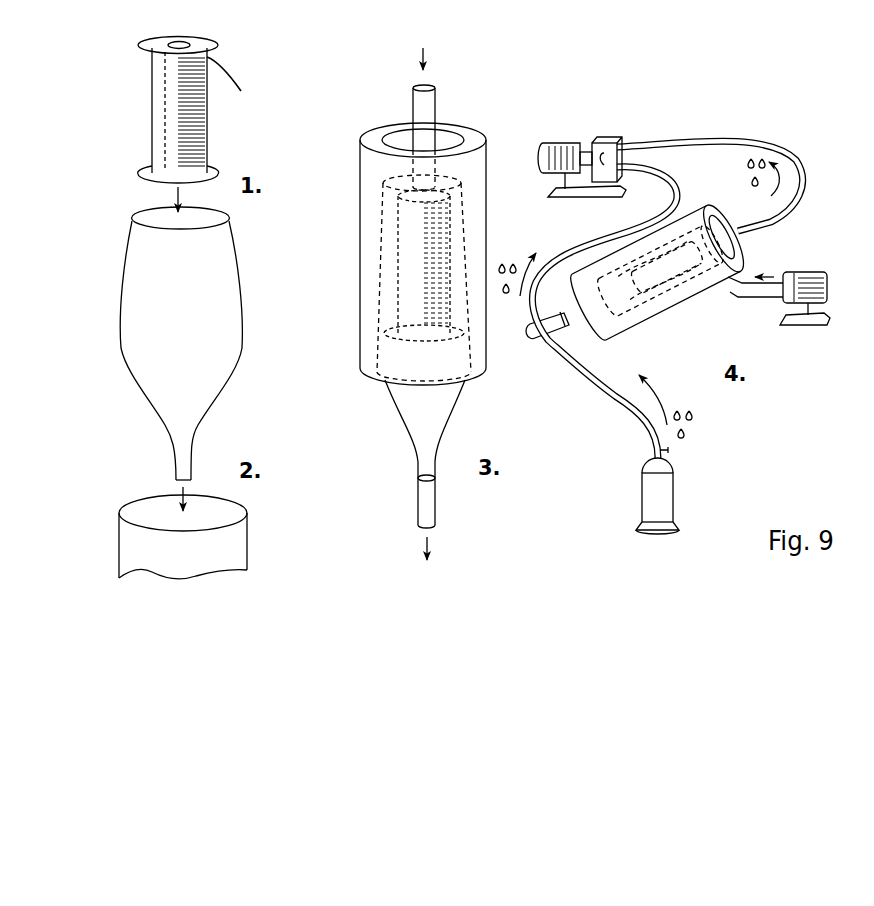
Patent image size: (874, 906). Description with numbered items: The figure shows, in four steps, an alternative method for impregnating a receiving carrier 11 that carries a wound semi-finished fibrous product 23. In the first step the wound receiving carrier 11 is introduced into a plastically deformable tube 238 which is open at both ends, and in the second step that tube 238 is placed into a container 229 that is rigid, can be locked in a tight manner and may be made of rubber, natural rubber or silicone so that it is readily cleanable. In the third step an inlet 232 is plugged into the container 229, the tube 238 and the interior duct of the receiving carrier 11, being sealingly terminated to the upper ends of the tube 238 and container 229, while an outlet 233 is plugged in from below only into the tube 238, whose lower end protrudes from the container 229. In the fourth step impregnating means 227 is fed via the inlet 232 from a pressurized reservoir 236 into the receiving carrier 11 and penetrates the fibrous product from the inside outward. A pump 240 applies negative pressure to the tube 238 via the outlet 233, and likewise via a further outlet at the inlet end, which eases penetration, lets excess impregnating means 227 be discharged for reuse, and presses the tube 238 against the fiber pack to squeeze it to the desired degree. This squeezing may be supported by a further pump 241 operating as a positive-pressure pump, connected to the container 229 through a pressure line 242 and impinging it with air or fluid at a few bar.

The receiving carrier 11 is at (232, 60).
The semi-finished fibrous product 23 is at (152, 132).
The impregnating means 227 is at (508, 252).
The container 229 is at (250, 543).
The inlet 232 is at (436, 103).
The outlet 233 is at (431, 501).
The reservoir 236 is at (664, 503).
The plastically deformable tube 238 is at (236, 267).
The pump 240 is at (608, 127).
The further pump 241 is at (806, 265).
The pressure line 242 is at (754, 298).